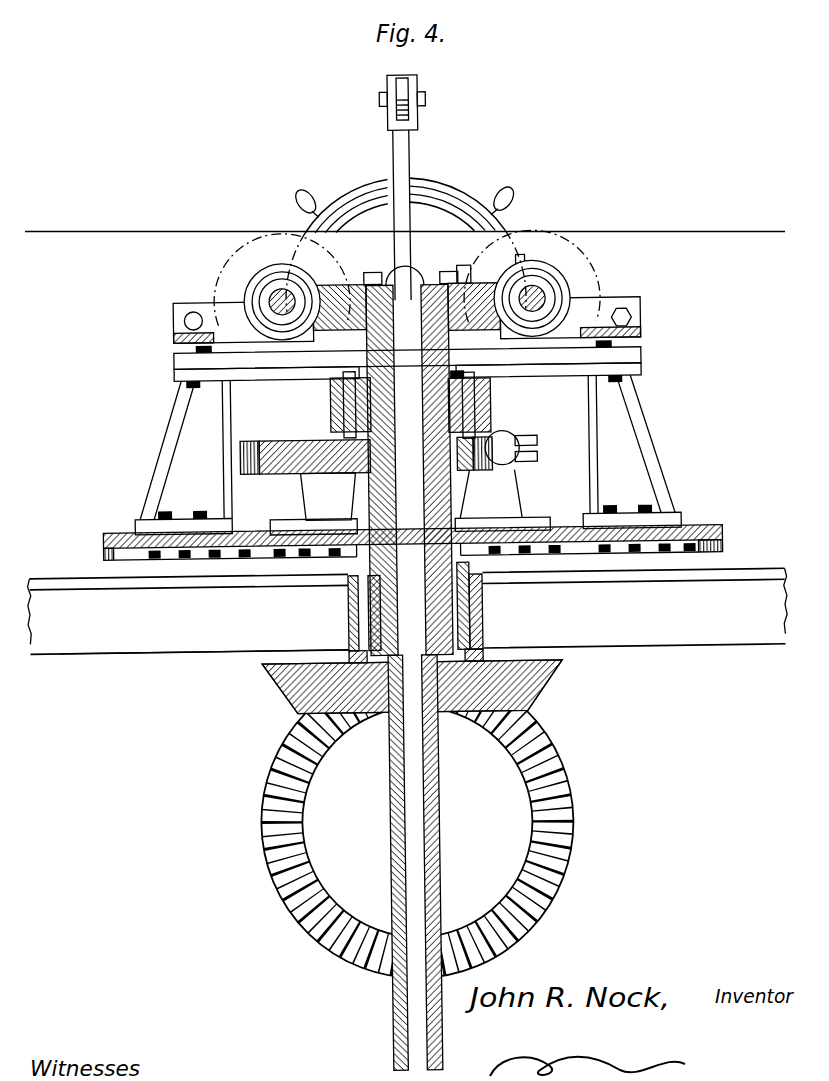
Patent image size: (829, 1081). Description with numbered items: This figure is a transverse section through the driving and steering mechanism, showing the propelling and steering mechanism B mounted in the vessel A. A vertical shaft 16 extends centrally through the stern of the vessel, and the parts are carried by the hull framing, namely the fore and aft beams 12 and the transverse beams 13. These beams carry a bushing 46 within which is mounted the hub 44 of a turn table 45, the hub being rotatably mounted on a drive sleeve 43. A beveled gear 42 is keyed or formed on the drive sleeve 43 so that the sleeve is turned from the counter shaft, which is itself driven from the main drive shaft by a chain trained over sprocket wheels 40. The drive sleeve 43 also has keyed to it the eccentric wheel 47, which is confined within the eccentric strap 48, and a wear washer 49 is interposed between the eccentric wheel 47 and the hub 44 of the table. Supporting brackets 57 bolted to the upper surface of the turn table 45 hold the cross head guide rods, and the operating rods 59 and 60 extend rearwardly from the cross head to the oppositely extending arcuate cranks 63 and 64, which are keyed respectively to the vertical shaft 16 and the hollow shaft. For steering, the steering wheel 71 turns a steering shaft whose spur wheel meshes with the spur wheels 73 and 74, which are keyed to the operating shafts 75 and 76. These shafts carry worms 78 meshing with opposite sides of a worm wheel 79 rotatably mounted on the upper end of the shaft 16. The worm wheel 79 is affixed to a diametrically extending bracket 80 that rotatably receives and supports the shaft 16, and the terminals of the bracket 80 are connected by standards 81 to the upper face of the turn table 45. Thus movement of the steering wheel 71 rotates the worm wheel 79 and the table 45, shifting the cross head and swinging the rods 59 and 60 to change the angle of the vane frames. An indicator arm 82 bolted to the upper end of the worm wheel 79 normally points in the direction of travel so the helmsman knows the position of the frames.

The fore and aft beams 12 is at (349, 606).
The transverse beams 13 is at (205, 639).
The vertical shaft 16 is at (440, 849).
The sprocket wheels 40 is at (530, 855).
The beveled gear 42 is at (541, 700).
The drive sleeve 43 is at (455, 629).
The hub 44 is at (455, 604).
The turn table 45 is at (722, 535).
The bushing 46 is at (370, 628).
The eccentric wheel 47 is at (293, 438).
The eccentric strap 48 is at (253, 438).
The wear washer 49 is at (465, 471).
The supporting brackets 57 is at (488, 493).
The operating rod 59 is at (482, 381).
The operating rod 60 is at (337, 383).
The arcuate crank 63 is at (340, 440).
The arcuate crank 64 is at (497, 407).
The steering wheel 71 is at (443, 208).
The spur wheel 73 is at (234, 259).
The spur wheel 74 is at (587, 265).
The operating shaft 75 is at (277, 298).
The operating shaft 76 is at (551, 301).
The worms 78 is at (565, 299).
The worm wheel 79 is at (475, 285).
The diametrically extending bracket 80 is at (624, 359).
The standards 81 is at (653, 433).
The indicator arm 82 is at (426, 92).
The vessel A is at (723, 592).
The propelling and steering mechanism B is at (525, 259).